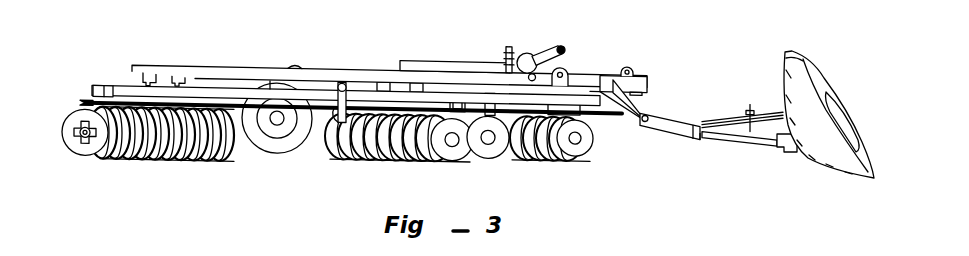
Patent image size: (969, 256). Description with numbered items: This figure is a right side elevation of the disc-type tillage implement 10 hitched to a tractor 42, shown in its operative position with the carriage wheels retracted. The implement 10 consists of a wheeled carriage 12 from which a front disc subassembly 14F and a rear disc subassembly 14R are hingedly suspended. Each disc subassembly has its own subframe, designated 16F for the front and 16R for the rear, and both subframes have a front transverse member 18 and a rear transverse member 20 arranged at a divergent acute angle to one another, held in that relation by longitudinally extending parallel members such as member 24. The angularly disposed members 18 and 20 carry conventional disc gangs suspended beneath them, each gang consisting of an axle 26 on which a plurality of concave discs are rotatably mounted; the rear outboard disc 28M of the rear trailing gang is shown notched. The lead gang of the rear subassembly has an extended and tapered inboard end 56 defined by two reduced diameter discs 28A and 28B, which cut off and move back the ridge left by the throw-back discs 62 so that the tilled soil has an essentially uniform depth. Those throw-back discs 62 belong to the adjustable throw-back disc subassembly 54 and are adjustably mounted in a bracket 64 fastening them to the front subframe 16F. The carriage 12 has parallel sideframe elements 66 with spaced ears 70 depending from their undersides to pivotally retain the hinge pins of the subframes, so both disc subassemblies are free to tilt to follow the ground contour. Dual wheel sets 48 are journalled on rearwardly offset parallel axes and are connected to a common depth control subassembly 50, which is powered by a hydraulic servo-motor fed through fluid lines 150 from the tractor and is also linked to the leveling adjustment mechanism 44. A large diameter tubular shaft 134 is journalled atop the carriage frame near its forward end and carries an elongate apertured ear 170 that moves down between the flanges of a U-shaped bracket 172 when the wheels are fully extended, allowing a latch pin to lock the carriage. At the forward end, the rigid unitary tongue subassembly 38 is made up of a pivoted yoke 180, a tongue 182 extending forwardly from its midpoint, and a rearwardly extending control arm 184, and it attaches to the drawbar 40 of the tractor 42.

The disc-type tillage implement 10 is at (650, 64).
The wheeled carriage 12 is at (462, 53).
The rear disc subassembly 14R is at (61, 154).
The front disc subassembly 14F is at (657, 133).
The rear subframe 16R is at (313, 140).
The front subframe 16F is at (531, 154).
The front transverse member 18 is at (583, 160).
The rear transverse member 20 is at (104, 88).
The longitudinally extending parallel member 24 is at (207, 96).
The axle 26 is at (80, 128).
The reduced diameter disc 28A is at (340, 118).
The reduced diameter disc 28B is at (350, 100).
The rear outboard disc 28M is at (82, 150).
The tongue subassembly 38 is at (693, 104).
The drawbar 40 is at (806, 158).
The tractor 42 is at (786, 60).
The leveling adjustment mechanism 44 is at (517, 49).
The dual wheel sets 48 is at (270, 82).
The depth control subassembly 50 is at (572, 47).
The throw-back disc subassembly 54 is at (520, 198).
The tapered inboard end 56 is at (340, 161).
The throw-back discs 62 is at (488, 160).
The bracket 64 is at (464, 153).
The sideframe elements 66 is at (294, 65).
The ears 70 is at (152, 66).
The tubular shaft 134 is at (536, 59).
The fluid lines 150 is at (725, 116).
The apertured ear 170 is at (568, 57).
The U-shaped bracket 172 is at (552, 84).
The yoke 180 is at (688, 131).
The tongue 182 is at (732, 136).
The control arm 184 is at (656, 140).